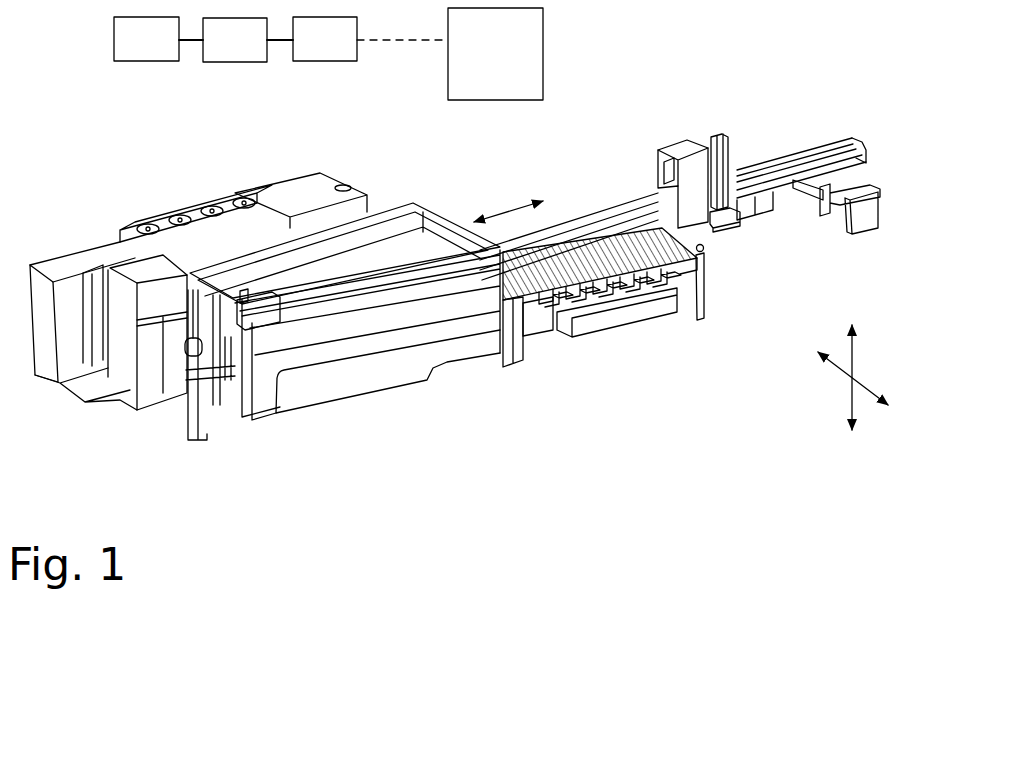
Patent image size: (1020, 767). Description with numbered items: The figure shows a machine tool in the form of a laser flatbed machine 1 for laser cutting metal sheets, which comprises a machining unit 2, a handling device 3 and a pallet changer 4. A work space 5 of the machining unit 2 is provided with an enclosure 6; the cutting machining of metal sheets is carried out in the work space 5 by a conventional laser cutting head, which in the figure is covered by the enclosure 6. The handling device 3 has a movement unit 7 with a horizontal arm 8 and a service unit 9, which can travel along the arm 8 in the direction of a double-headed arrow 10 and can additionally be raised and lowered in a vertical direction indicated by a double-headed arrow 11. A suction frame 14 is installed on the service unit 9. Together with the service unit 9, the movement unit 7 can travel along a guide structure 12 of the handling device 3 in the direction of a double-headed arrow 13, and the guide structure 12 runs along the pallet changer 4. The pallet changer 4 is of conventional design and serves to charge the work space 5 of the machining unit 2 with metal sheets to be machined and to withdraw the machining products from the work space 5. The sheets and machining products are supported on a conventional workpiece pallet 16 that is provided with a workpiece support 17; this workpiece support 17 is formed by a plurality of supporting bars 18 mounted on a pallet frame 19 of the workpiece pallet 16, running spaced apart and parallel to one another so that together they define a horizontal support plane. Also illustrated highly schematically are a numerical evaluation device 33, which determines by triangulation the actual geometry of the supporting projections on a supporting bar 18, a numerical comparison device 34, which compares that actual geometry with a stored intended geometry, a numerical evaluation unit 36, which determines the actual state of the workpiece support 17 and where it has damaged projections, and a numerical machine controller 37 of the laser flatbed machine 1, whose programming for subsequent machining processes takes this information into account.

The laser flatbed machine 1 is at (115, 207).
The machining unit 2 is at (436, 210).
The handling device 3 is at (693, 176).
The pallet changer 4 is at (628, 290).
The work space 5 is at (345, 281).
The enclosure 6 is at (347, 384).
The movement unit 7 is at (650, 153).
The horizontal arm 8 is at (766, 212).
The service unit 9 is at (714, 128).
The double-headed arrow 10 is at (838, 368).
The double-headed arrow 11 is at (857, 358).
The guide structure 12 is at (826, 138).
The double-headed arrow 13 is at (511, 212).
The suction frame 14 is at (733, 226).
The workpiece pallet 16 is at (536, 310).
The workpiece support 17 is at (597, 252).
The supporting bars 18 is at (645, 262).
The pallet frame 19 is at (690, 262).
The numerical evaluation device 33 is at (158, 52).
The numerical comparison device 34 is at (247, 52).
The numerical evaluation unit 36 is at (337, 52).
The numerical machine controller 37 is at (507, 65).